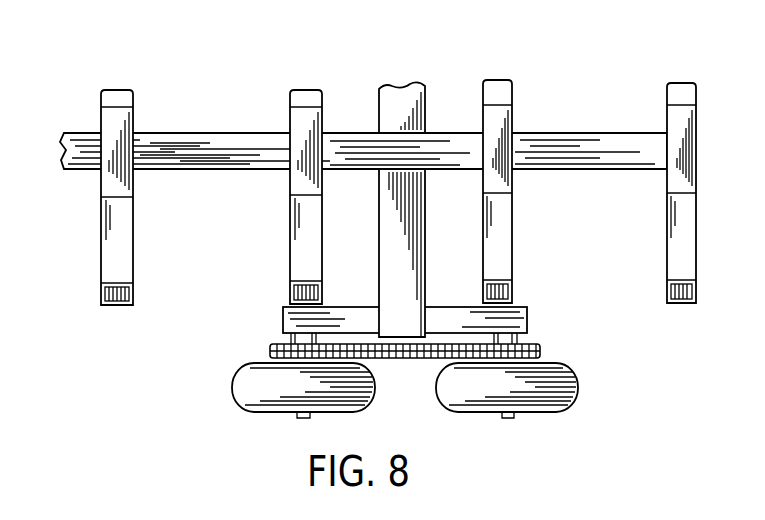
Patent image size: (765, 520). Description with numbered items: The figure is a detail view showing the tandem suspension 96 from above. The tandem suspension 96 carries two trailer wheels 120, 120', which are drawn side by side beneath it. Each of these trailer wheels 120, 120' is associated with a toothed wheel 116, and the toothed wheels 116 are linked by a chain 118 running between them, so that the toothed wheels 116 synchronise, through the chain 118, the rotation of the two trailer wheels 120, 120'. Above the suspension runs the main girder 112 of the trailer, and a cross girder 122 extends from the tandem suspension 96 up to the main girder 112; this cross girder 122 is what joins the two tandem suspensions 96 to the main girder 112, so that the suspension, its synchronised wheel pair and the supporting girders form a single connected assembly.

The main girder 112 is at (227, 148).
The cross girder 122 is at (400, 267).
The tandem suspension 96 is at (323, 318).
The chain 118 is at (468, 353).
The toothed wheels 116 is at (533, 358).
The trailer wheels 120 is at (544, 375).
The left wheel 120' is at (271, 370).